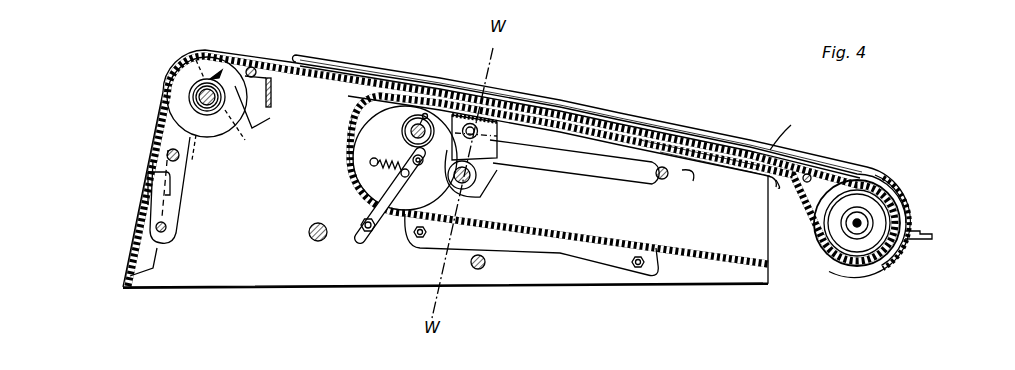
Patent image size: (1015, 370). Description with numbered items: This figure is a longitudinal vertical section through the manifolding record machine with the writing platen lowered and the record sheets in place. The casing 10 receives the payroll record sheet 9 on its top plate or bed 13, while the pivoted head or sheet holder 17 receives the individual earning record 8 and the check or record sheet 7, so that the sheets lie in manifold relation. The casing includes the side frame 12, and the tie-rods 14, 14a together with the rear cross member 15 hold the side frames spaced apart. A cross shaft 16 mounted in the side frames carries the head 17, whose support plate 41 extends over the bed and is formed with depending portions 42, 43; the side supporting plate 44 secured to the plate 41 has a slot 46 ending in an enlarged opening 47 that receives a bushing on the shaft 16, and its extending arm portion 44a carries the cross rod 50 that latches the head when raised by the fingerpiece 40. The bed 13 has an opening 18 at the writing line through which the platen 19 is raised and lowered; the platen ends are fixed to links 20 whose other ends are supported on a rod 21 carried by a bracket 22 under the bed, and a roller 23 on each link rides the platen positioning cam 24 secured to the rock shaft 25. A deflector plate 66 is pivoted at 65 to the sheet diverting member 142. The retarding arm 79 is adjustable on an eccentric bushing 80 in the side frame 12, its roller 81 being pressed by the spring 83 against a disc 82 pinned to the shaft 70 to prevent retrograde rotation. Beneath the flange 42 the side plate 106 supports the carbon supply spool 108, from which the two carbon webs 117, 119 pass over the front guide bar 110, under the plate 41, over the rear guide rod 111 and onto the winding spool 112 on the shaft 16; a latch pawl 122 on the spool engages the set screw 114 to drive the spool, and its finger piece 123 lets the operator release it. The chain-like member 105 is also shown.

The check or record sheet 7 is at (536, 110).
The individual earning record 8 is at (782, 128).
The payroll record sheet 9 is at (546, 234).
The casing 10 is at (742, 278).
The side frame 12 is at (514, 168).
The top plate or bed 13 is at (736, 166).
The tie-rod 14 is at (484, 270).
The tie-rod 14a is at (318, 243).
The rear cross member 15 is at (135, 232).
The cross shaft 16 is at (196, 92).
The head or sheet holder 17 is at (895, 185).
The opening 18 is at (498, 100).
The platen or support 19 is at (473, 126).
The link 20 is at (596, 176).
The rod 21 is at (663, 184).
The bracket 22 is at (690, 180).
The roller 23 is at (496, 136).
The platen positioning cam 24 is at (491, 179).
The rock shaft 25 is at (470, 184).
The fingerpiece 40 is at (934, 236).
The support or plate 41 is at (694, 126).
The depending portion 42 is at (907, 204).
The depending portion 43 is at (157, 97).
The side supporting plate 44 is at (165, 128).
The extending arm portion 44a is at (182, 210).
The slot 46 is at (207, 128).
The enlarged opening 47 is at (198, 58).
The cross rod 50 is at (169, 242).
The pivot 65 is at (347, 113).
The plate 66 is at (396, 106).
The shaft 70 is at (410, 133).
The arm 79 is at (362, 205).
The eccentric bushing 80 is at (375, 222).
The roller 81 is at (418, 166).
The disc 82 is at (411, 124).
The spring 83 is at (371, 167).
The conveyor chain 105 is at (446, 85).
The side plate 106 is at (866, 266).
The supply spool 108 is at (886, 257).
The front guide bar 110 is at (816, 160).
The rear guide rod 111 is at (254, 66).
The winding spool 112 is at (196, 68).
The set screw 114 is at (218, 72).
The carbon web 117 is at (710, 137).
The carbon web 119 is at (304, 72).
The latch pawl 122 is at (243, 112).
The finger piece 123 is at (240, 138).
The sheet diverting member 142 is at (660, 252).